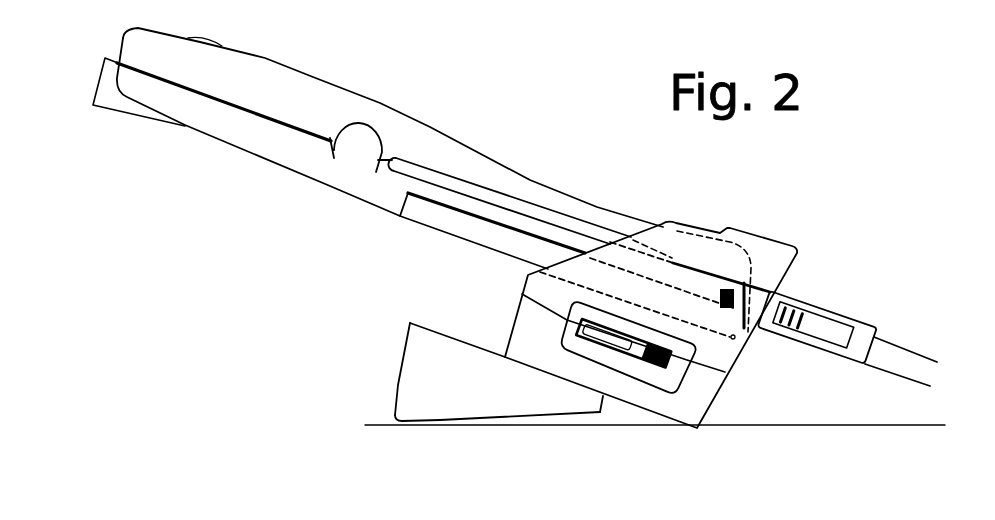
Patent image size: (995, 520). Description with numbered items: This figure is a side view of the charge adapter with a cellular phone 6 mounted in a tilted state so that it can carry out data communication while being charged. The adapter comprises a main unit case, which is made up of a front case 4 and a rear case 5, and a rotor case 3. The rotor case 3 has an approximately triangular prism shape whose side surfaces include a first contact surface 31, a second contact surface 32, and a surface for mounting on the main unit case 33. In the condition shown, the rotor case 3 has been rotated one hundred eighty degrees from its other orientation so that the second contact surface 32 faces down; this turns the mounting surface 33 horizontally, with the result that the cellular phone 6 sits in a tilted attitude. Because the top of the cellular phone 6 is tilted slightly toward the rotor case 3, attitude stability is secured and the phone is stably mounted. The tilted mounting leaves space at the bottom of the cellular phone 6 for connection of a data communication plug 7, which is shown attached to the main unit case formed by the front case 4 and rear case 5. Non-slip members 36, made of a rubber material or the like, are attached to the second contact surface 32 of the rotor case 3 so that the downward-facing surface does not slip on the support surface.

The rotor case 3 is at (456, 379).
The front case 4 is at (757, 247).
The rear case 5 is at (703, 397).
The cellular phone 6 is at (338, 92).
The data communication plug 7 is at (857, 330).
The first contact surface 31 is at (393, 352).
The second contact surface 32 is at (480, 423).
The surface for mounting on the main unit case 33 is at (477, 339).
The non-slip members 36 is at (412, 425).